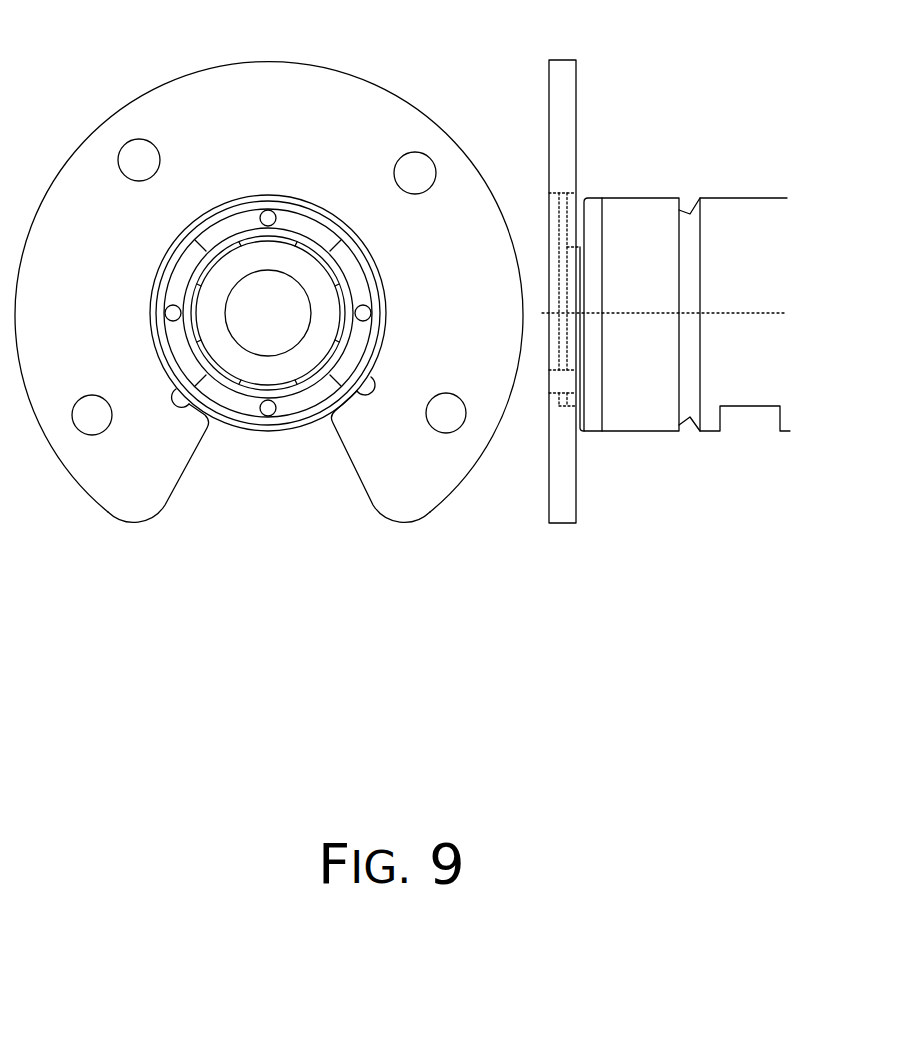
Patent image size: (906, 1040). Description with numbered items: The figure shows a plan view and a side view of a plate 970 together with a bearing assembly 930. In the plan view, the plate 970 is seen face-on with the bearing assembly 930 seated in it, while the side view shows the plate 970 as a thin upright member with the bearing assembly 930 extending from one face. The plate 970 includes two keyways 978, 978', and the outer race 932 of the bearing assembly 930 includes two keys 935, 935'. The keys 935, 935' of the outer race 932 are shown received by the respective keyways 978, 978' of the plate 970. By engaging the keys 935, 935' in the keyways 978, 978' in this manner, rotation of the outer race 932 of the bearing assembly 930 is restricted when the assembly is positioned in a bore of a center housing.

The plate 970 is at (193, 73).
The bearing assembly 930 is at (368, 258).
The outer race 932 is at (658, 285).
The key 935 is at (507, 372).
The key 935' is at (146, 388).
The keyway 978 is at (453, 456).
The keyway 978' is at (158, 463).